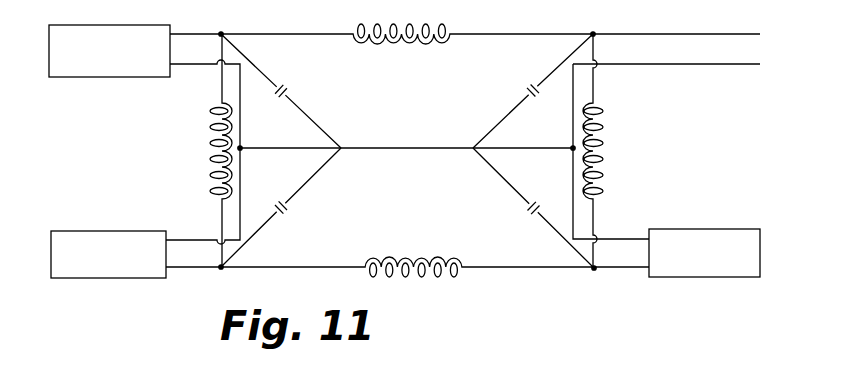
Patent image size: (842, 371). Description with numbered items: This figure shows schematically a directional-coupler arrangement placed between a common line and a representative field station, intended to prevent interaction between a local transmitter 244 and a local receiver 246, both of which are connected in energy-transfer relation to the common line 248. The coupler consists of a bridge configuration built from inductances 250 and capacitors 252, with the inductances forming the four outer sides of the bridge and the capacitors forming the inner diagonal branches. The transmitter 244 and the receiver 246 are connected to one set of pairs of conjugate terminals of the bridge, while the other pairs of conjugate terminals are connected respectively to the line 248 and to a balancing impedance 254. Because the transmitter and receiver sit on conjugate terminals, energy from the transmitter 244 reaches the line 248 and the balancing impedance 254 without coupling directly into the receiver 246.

The local transmitter 244 is at (147, 8).
The local receiver 246 is at (135, 213).
The common line 248 is at (666, 52).
The inductances 250 is at (396, 45).
The capacitors 252 is at (287, 91).
The balancing impedance 254 is at (749, 212).